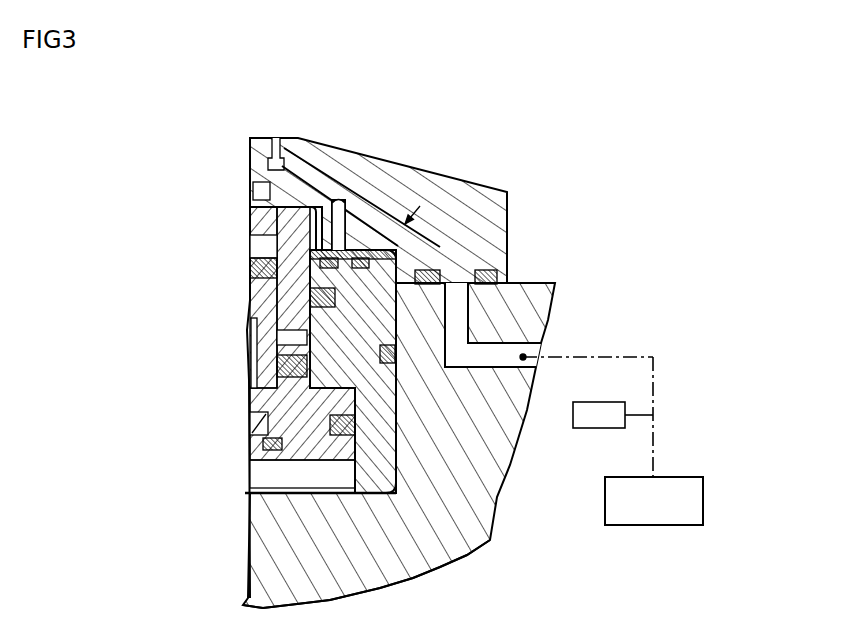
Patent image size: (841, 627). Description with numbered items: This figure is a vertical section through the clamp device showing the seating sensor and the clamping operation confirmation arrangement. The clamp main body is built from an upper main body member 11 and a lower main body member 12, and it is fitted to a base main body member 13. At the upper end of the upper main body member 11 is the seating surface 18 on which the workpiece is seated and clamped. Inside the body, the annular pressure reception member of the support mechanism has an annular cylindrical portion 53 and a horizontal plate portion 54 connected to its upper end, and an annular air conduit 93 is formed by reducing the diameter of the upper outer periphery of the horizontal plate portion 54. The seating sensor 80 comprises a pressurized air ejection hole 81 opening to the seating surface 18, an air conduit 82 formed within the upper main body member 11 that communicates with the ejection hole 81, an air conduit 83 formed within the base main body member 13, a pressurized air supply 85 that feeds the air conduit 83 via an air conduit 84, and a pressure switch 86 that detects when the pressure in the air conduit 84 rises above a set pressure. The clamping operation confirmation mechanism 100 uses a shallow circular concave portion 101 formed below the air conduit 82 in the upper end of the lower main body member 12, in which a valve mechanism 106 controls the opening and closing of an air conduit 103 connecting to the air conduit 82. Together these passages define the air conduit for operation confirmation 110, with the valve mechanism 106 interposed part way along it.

The upper main body member 11 is at (333, 147).
The lower main body member 12 is at (395, 478).
The base main body member 13 is at (390, 542).
The seating surface 18 is at (263, 138).
The pressurized air ejection hole 81 is at (277, 138).
The clamping operation confirmation mechanism 100 is at (355, 232).
The annular cylindrical portion 53 is at (262, 304).
The horizontal plate portion 54 is at (260, 230).
The annular air conduit 93 is at (282, 205).
The circular concave portion 101 is at (268, 330).
The air conduit 103 is at (250, 282).
The valve mechanism 106 is at (356, 284).
The air conduit for operation confirmation 110 is at (436, 248).
The air conduit 82 is at (446, 243).
The air conduit 83 is at (497, 343).
The air conduit 84 is at (580, 352).
The seating sensor 80 is at (616, 301).
The pressurized air supply 85 is at (668, 477).
The pressure switch 86 is at (600, 430).